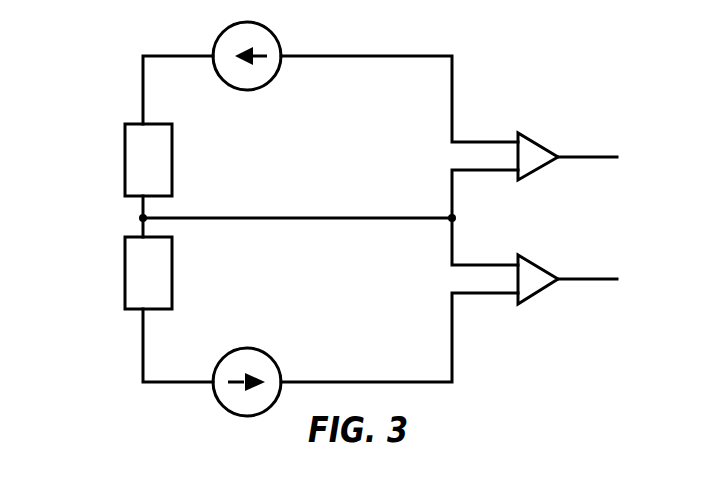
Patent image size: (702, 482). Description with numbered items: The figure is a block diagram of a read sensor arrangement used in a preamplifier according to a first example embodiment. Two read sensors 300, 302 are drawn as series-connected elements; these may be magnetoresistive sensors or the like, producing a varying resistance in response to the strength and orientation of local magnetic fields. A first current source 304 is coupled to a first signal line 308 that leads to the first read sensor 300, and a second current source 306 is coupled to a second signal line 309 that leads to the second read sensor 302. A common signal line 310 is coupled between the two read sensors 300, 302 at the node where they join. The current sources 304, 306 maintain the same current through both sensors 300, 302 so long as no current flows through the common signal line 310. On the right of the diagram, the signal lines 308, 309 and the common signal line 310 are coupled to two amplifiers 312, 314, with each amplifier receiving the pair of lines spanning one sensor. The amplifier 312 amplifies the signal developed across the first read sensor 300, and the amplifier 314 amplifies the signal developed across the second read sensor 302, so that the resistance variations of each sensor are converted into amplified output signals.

The read sensor 300 is at (122, 155).
The read sensor 302 is at (122, 265).
The current source 304 is at (247, 90).
The current source 306 is at (245, 347).
The first signal line 308 is at (177, 58).
The second signal line 309 is at (173, 380).
The common signal line 310 is at (197, 213).
The amplifier 312 is at (535, 140).
The amplifier 314 is at (538, 268).